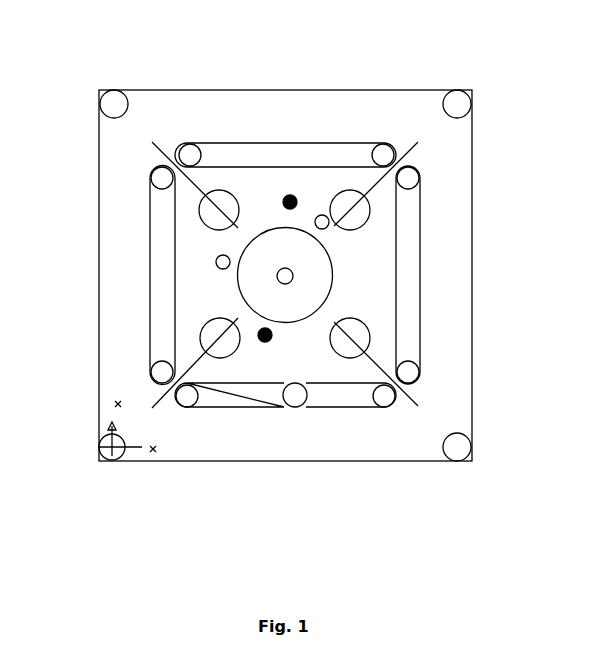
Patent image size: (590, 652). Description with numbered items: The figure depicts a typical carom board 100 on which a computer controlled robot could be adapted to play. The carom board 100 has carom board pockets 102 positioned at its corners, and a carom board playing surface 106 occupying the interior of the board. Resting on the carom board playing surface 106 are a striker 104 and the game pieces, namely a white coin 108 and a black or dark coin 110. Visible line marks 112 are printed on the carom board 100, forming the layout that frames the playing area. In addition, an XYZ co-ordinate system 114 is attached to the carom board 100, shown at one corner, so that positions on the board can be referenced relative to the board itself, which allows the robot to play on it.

The carom board 100 is at (463, 491).
The carom board pockets 102 is at (466, 102).
The striker 104 is at (297, 414).
The carom board playing surface 106 is at (344, 373).
The white coin 108 is at (214, 263).
The black or dark coin 110 is at (289, 193).
The visible line marks 112 is at (405, 303).
The XYZ co-ordinate system 114 is at (106, 451).